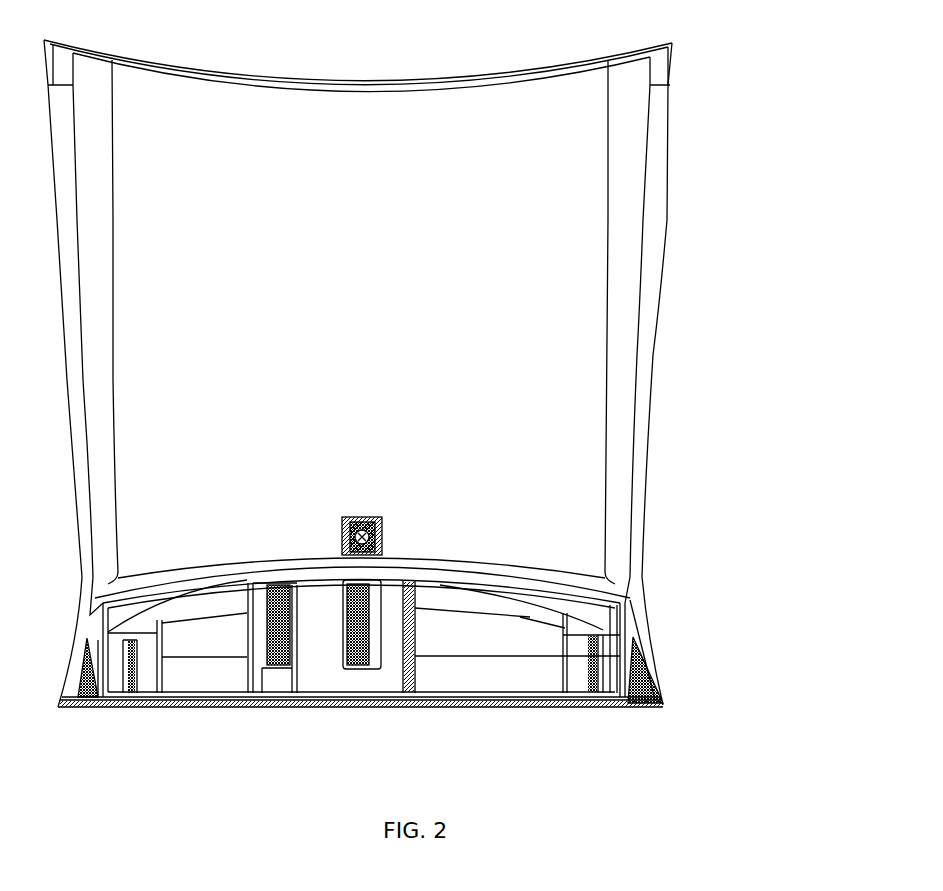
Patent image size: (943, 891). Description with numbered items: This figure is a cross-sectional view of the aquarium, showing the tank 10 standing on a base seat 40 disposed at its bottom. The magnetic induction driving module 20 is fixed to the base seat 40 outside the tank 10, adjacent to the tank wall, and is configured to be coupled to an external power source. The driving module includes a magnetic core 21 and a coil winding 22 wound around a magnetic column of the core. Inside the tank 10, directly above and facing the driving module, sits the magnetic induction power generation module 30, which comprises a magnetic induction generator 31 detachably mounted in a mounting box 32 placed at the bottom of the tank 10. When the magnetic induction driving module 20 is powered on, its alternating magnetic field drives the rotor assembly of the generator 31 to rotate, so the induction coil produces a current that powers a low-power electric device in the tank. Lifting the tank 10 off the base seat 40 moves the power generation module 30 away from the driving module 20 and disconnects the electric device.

The tank 10 is at (635, 355).
The magnetic induction driving module 20 is at (403, 680).
The magnetic core 21 is at (320, 688).
The coil winding 22 is at (369, 665).
The magnetic induction power generation module 30 is at (375, 487).
The magnetic induction generator 31 is at (372, 515).
The mounting box 32 is at (355, 515).
The base seat 40 is at (655, 672).